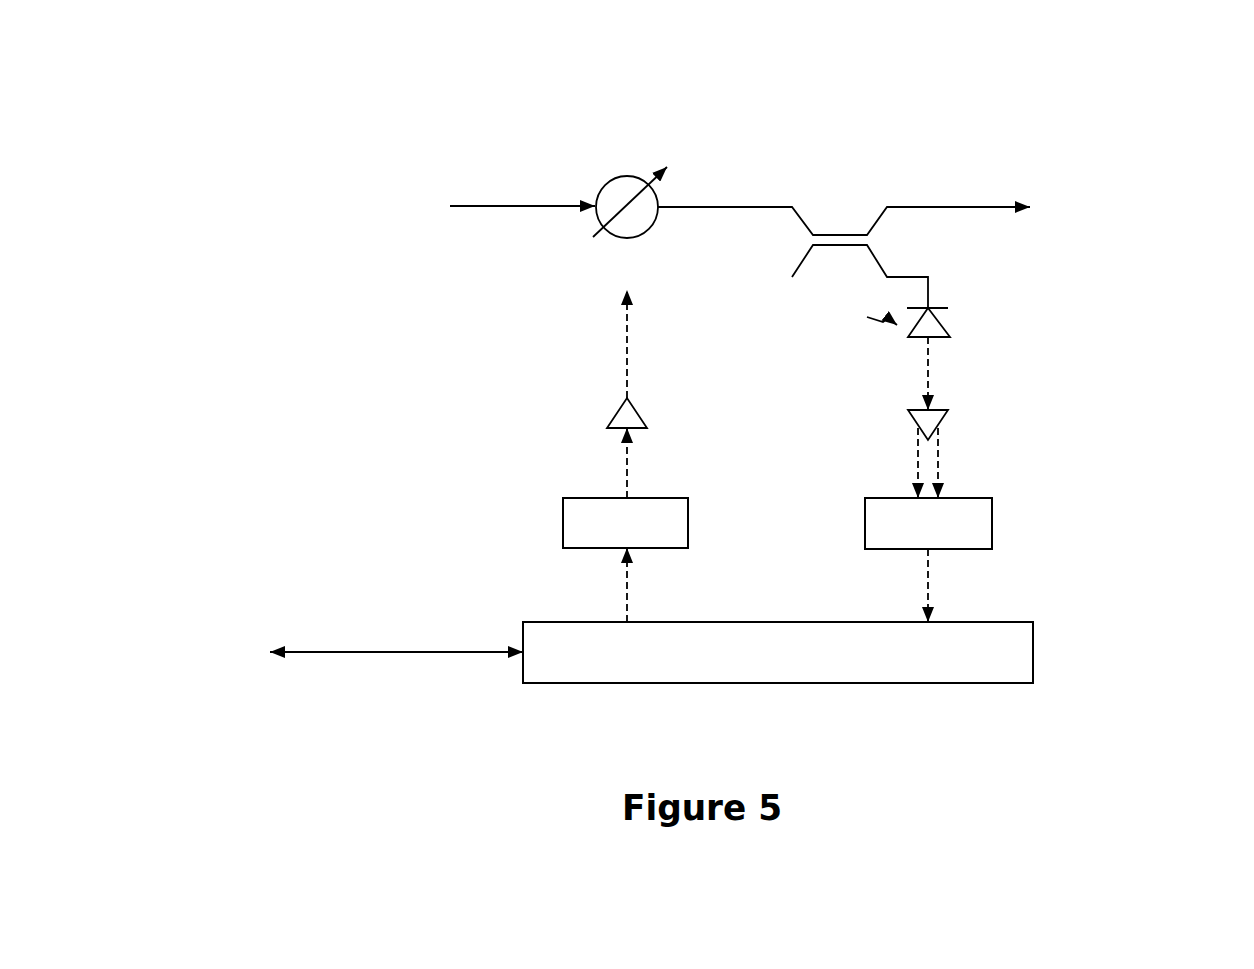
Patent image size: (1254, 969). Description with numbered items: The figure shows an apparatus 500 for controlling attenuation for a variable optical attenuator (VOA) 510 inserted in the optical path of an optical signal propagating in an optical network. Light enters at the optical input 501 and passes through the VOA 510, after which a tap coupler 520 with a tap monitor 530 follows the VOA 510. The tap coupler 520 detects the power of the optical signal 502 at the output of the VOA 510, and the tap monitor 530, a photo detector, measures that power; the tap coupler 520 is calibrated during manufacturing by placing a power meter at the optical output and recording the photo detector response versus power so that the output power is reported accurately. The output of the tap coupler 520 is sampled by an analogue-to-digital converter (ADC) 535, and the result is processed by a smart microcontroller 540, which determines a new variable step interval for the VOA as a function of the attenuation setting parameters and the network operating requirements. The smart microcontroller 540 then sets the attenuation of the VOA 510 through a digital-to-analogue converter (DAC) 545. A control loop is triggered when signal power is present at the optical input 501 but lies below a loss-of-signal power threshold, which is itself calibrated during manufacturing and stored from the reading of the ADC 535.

The apparatus 500 is at (302, 83).
The optical input 501 is at (481, 282).
The optical signal 502 is at (1243, 248).
The variable optical attenuator (VOA) 510 is at (625, 177).
The tap coupler 520 is at (842, 117).
The tap monitor 530 is at (930, 307).
The analogue-to-digital converter (ADC) 535 is at (992, 498).
The smart microcontroller 540 is at (1012, 620).
The digital-to-analogue converter (DAC) 545 is at (563, 528).